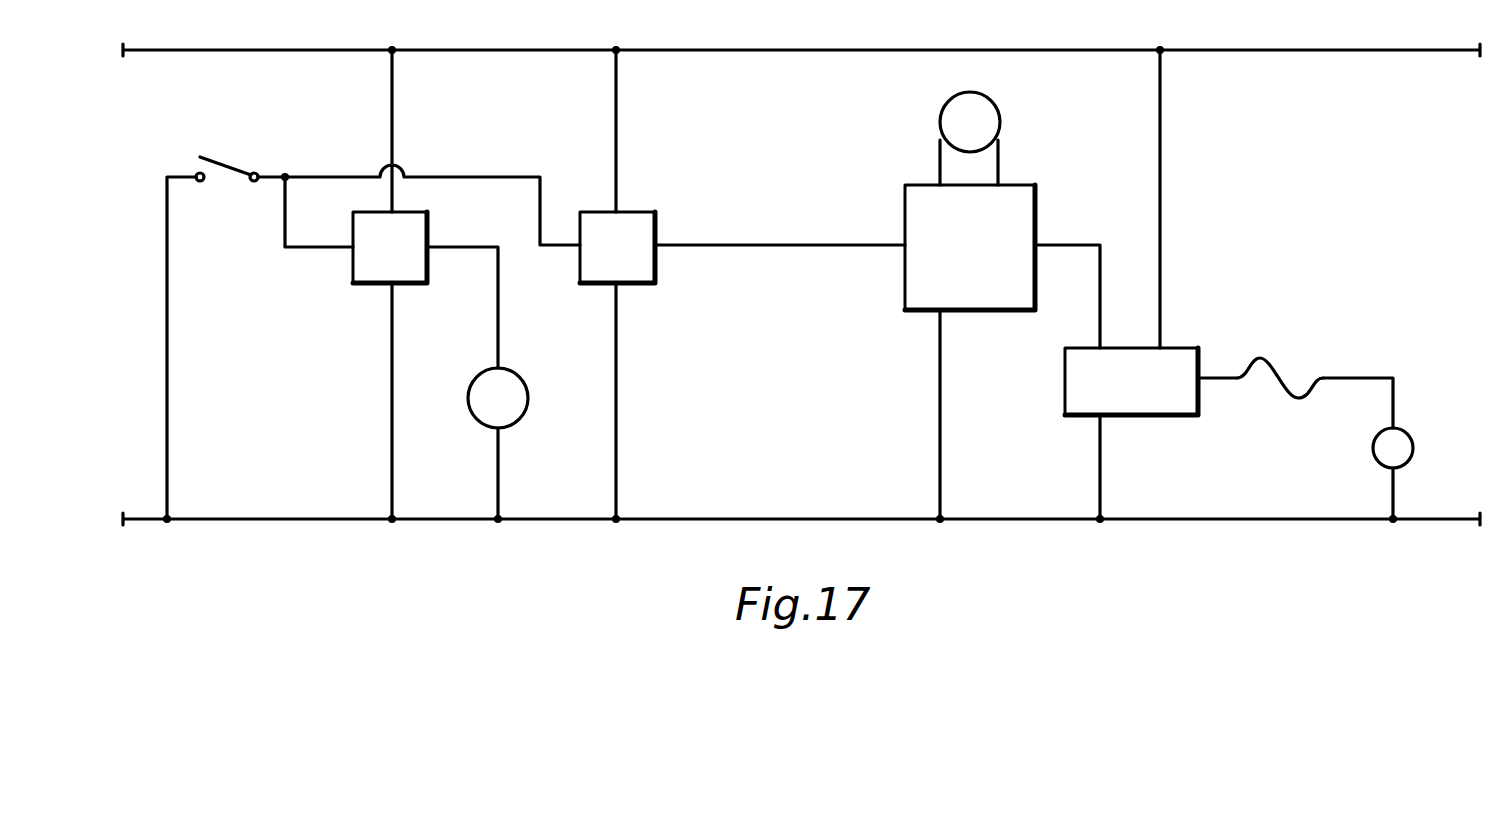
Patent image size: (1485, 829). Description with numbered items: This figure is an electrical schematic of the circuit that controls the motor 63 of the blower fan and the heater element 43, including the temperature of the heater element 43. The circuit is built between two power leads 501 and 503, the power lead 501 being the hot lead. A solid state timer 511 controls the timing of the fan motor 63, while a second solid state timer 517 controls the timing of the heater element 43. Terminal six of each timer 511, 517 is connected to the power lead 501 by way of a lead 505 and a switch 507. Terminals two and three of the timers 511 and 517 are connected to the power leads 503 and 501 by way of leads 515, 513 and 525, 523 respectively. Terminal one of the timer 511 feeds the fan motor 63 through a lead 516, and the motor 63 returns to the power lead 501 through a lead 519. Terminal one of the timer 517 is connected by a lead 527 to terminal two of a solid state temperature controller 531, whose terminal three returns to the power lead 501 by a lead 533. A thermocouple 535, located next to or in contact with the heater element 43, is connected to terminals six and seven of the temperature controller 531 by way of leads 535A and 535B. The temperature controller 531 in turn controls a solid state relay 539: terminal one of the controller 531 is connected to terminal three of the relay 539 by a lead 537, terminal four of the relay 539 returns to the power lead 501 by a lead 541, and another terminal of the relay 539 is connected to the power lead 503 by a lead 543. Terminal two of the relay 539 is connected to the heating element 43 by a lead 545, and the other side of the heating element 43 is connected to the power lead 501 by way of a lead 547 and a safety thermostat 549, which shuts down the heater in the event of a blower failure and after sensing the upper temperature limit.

The power lead 501 is at (456, 522).
The power lead 503 is at (475, 50).
The lead 505 is at (447, 177).
The switch 507 is at (224, 165).
The solid state timer 511 is at (407, 285).
The lead 513 is at (392, 384).
The lead 515 is at (392, 108).
The lead 516 is at (501, 263).
The solid state timer 517 is at (633, 212).
The lead 519 is at (498, 470).
The lead 523 is at (616, 402).
The lead 525 is at (616, 108).
The lead 527 is at (752, 245).
The temperature controller 531 is at (1035, 208).
The lead 533 is at (940, 398).
The thermocouple 535 is at (962, 95).
The lead 535A is at (940, 150).
The lead 535B is at (1000, 150).
The lead 537 is at (1100, 262).
The solid state relay 539 is at (1145, 418).
The lead 541 is at (1100, 470).
The lead 543 is at (1160, 182).
The lead 545 is at (1215, 372).
The heater element 43 is at (1282, 375).
The lead 547 is at (1353, 378).
The safety thermostat 549 is at (1413, 440).
The fan motor 63 is at (528, 398).